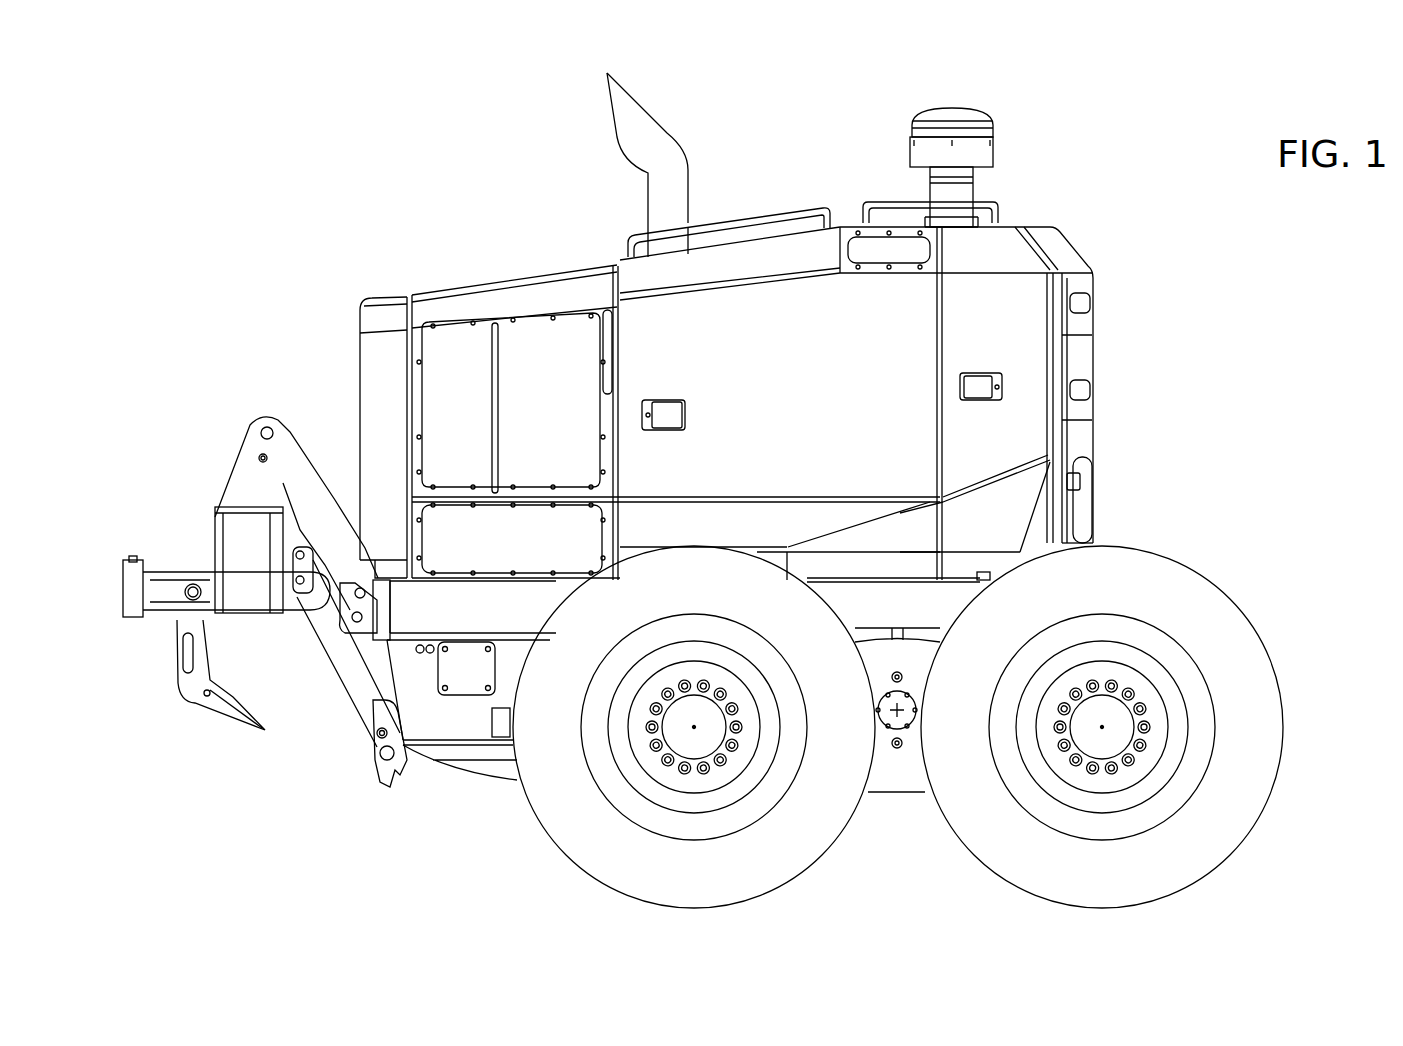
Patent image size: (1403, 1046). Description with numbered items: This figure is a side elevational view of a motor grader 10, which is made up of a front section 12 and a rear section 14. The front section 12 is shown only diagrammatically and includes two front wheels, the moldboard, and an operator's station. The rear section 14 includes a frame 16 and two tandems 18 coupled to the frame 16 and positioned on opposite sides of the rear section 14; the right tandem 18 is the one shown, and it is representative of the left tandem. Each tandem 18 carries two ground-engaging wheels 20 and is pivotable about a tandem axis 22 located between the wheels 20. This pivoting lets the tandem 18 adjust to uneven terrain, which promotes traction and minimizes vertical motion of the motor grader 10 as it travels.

The motor grader 10 is at (362, 189).
The front section 12 is at (1232, 335).
The rear section 14 is at (451, 210).
The frame 16 is at (421, 718).
The tandem 18 is at (470, 835).
The ground-engaging wheel 20 is at (755, 868).
The tandem axis 22 is at (899, 713).